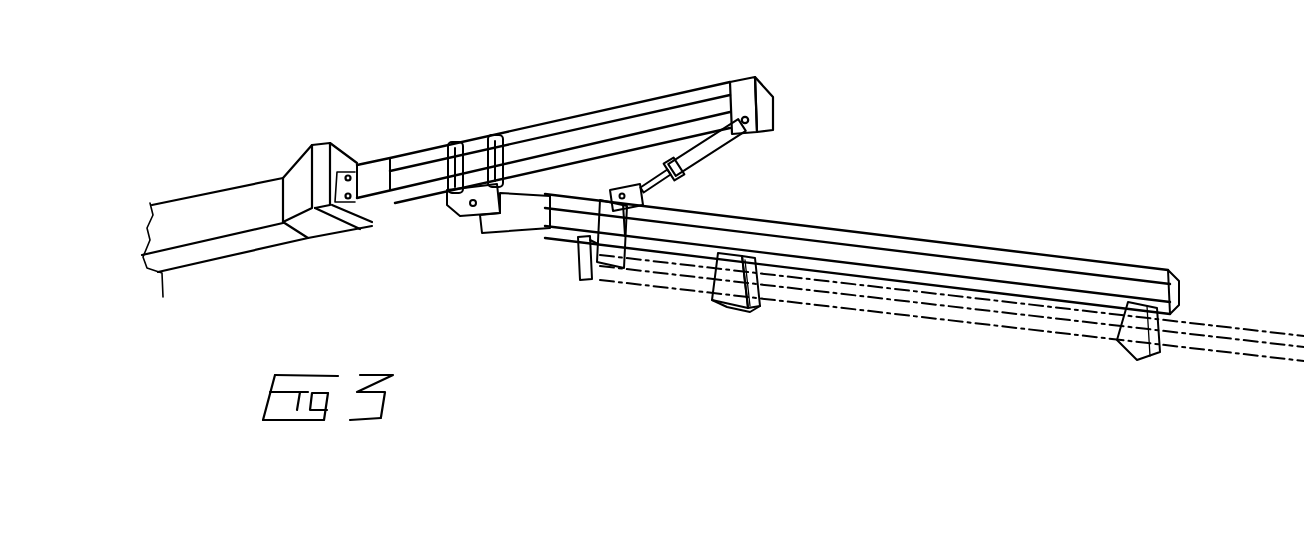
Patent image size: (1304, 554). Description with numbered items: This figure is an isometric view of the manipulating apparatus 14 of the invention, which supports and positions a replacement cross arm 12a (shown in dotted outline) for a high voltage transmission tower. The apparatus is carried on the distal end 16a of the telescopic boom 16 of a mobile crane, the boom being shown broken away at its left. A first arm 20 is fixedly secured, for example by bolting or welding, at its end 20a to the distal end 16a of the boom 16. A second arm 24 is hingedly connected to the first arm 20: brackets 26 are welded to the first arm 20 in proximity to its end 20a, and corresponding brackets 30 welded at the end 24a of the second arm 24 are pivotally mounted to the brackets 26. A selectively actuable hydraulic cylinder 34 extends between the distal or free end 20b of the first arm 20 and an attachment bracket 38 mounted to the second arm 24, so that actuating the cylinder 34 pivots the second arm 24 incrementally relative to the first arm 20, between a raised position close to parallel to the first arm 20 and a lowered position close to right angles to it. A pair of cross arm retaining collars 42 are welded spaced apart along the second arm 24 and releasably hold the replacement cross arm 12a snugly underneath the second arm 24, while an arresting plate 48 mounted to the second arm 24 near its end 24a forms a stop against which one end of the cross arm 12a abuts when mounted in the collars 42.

The replacement cross arm 12a is at (1233, 347).
The manipulating apparatus 14 is at (874, 90).
The telescopic boom 16 is at (190, 255).
The distal end 16a is at (255, 186).
The first arm 20 is at (592, 118).
The end 20a is at (363, 163).
The distal end 20b is at (741, 82).
The second arm 24 is at (918, 238).
The end 24a is at (535, 250).
The brackets 26 is at (458, 200).
The brackets 30 is at (510, 213).
The hydraulic cylinder 34 is at (702, 160).
The attachment bracket 38 is at (643, 204).
The cross arm retaining collars 42 is at (730, 282).
The arresting plate 48 is at (582, 280).